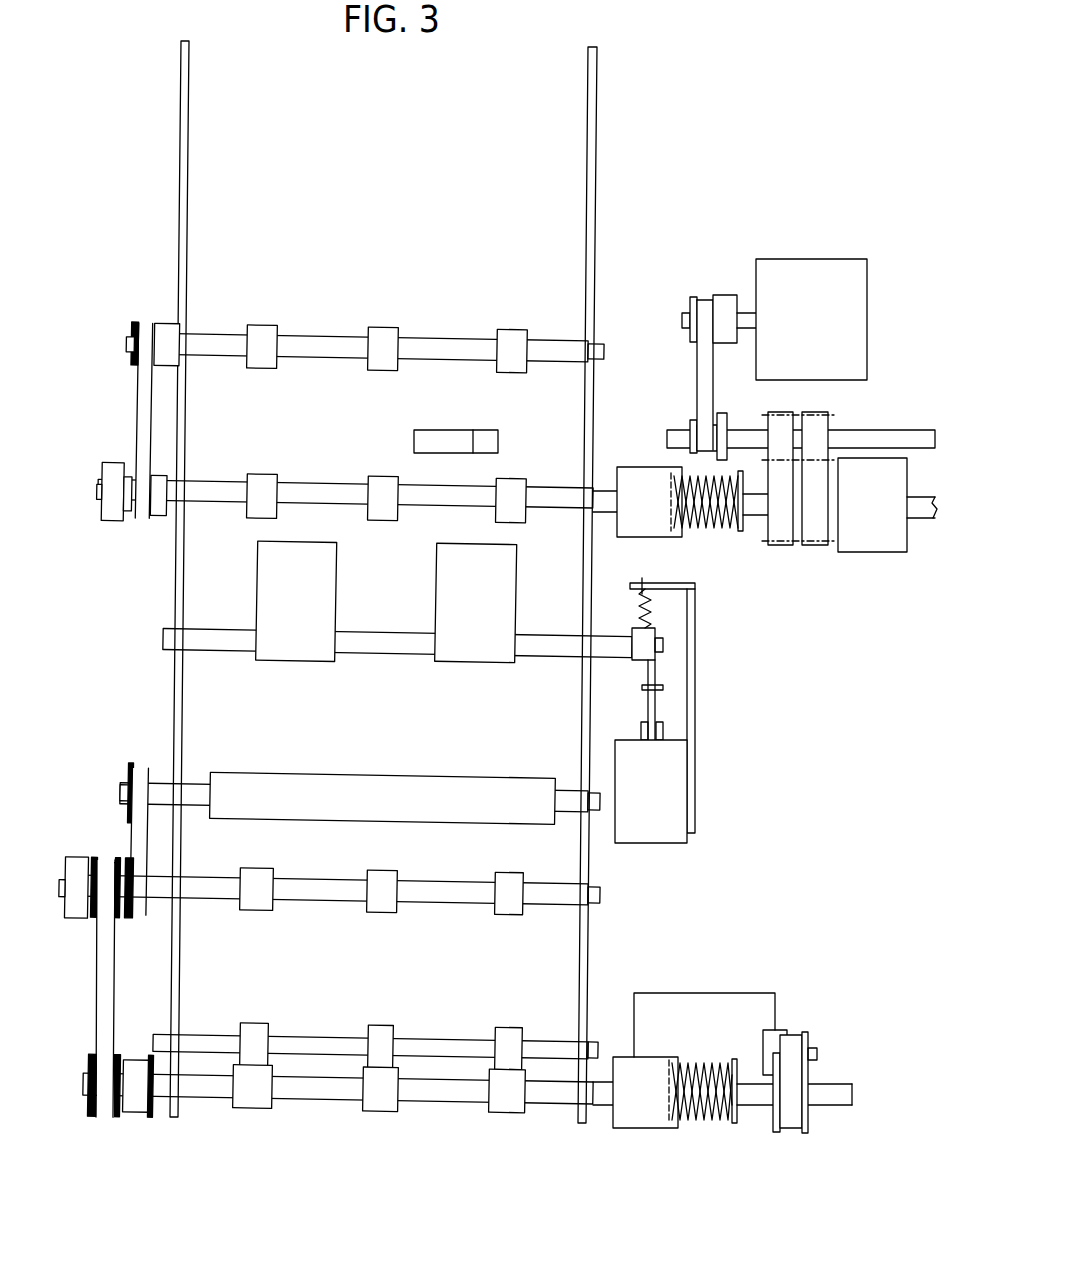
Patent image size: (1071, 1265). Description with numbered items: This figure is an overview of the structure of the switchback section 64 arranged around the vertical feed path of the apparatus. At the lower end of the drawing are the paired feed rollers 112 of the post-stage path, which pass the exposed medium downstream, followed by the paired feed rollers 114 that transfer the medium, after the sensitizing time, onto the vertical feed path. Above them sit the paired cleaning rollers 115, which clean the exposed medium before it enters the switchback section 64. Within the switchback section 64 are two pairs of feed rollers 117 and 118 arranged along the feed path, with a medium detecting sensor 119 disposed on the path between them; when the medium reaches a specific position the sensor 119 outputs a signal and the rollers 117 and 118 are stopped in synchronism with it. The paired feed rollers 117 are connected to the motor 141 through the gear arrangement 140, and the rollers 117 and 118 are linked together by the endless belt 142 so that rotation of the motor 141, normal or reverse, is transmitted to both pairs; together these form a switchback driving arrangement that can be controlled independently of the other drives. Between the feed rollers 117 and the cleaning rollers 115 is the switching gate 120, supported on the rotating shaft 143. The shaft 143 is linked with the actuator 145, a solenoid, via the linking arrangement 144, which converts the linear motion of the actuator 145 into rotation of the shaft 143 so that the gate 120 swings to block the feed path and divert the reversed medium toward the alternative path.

The switchback section 64 is at (164, 300).
The paired feed rollers 112 is at (250, 1087).
The paired feed rollers 114 is at (254, 893).
The paired cleaning rollers 115 is at (264, 772).
The paired feed rollers 117 is at (508, 488).
The paired feed rollers 118 is at (512, 334).
The medium detecting sensor 119 is at (429, 438).
The switching gate 120 is at (295, 645).
The gear arrangement 140 is at (857, 438).
The motor 141 is at (798, 270).
The endless belt 142 is at (143, 438).
The rotating shaft 143 is at (355, 638).
The linking arrangement 144 is at (655, 670).
The actuator 145 is at (655, 828).